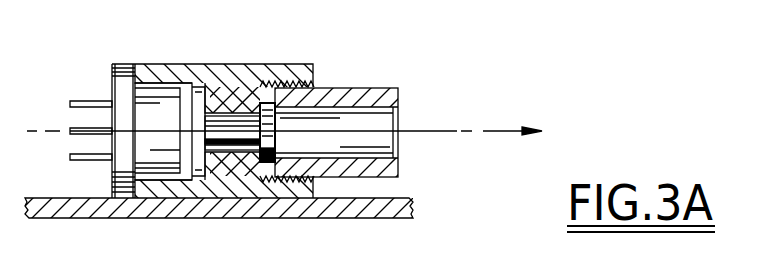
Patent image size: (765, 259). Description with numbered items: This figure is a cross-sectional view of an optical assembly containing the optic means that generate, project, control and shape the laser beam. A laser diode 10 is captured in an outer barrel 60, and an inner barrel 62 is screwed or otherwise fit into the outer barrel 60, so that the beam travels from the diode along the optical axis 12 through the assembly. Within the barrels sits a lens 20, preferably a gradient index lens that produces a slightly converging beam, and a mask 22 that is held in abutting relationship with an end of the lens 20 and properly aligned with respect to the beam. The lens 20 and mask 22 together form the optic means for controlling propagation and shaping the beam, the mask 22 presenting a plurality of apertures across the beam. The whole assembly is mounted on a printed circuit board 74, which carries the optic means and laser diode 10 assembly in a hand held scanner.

The laser diode 10 is at (150, 115).
The optical axis 12 is at (428, 131).
The lens 20 is at (235, 128).
The mask 22 is at (272, 108).
The outer barrel 60 is at (177, 63).
The inner barrel 62 is at (352, 88).
The printed circuit board 74 is at (103, 208).